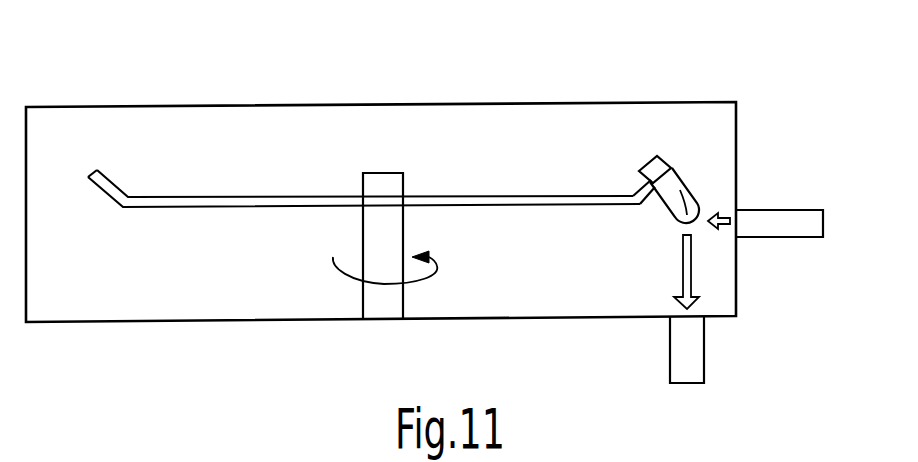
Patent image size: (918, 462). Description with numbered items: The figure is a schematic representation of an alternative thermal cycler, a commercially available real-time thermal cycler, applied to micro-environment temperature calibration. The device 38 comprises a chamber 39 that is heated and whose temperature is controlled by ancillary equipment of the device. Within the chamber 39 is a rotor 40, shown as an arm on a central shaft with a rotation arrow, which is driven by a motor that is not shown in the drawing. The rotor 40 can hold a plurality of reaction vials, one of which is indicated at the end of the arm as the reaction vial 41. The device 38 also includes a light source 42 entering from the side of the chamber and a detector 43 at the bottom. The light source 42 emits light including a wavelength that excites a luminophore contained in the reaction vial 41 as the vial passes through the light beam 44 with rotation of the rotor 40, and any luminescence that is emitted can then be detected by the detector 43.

The device 38 is at (117, 92).
The chamber 39 is at (168, 271).
The rotor 40 is at (300, 195).
The reaction vial 41 is at (682, 180).
The light source 42 is at (782, 210).
The detector 43 is at (705, 352).
The light beam 44 is at (725, 226).